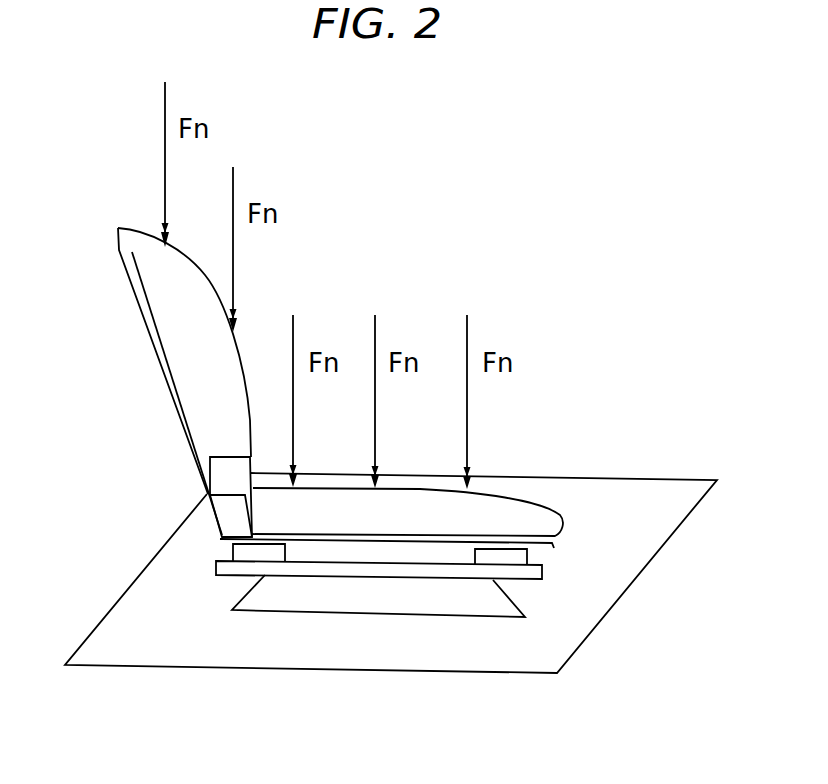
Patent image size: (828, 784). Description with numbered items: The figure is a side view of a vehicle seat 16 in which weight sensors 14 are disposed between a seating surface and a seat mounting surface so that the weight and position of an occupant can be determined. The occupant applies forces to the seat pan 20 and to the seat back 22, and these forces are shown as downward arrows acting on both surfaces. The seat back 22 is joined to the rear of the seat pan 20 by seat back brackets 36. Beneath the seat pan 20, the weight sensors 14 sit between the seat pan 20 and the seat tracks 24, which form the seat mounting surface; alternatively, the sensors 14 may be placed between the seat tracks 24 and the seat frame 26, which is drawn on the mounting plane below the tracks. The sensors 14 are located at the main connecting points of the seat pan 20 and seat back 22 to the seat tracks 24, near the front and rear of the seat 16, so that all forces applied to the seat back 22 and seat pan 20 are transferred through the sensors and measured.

The weight sensors 14 is at (233, 551).
The vehicle seat 16 is at (465, 253).
The seat pan 20 is at (523, 513).
The seat back 22 is at (158, 363).
The seat tracks 24 is at (530, 580).
The seat frame 26 is at (462, 617).
The seat back brackets 36 is at (232, 511).